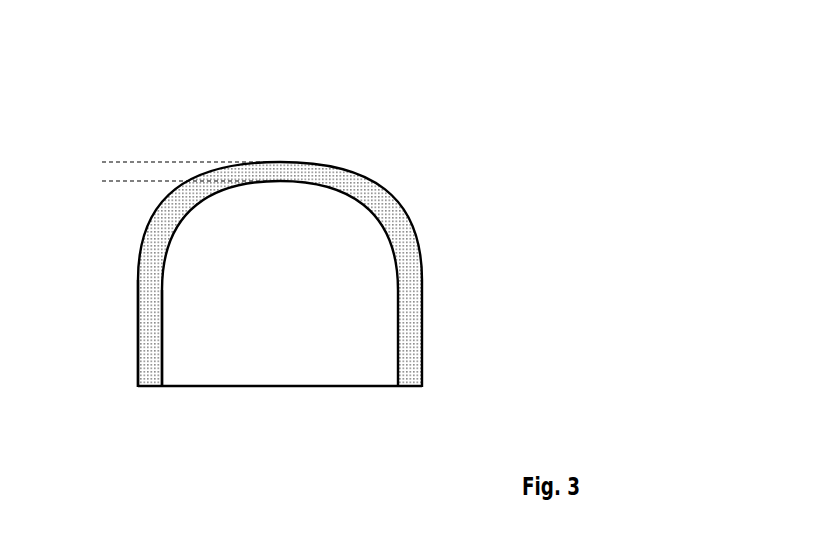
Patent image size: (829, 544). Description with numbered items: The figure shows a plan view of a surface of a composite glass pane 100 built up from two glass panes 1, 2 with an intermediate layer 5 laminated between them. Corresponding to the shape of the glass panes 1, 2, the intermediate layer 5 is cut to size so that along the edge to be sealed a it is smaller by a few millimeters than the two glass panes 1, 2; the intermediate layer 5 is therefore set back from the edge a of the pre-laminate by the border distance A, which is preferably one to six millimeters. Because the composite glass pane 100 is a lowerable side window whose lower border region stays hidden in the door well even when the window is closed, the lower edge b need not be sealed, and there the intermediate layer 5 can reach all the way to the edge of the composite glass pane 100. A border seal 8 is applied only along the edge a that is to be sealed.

The composite glass pane 100 is at (278, 248).
The glass pane 1 is at (319, 267).
The glass pane 2 is at (319, 267).
The border seal 8 is at (393, 205).
The intermediate layer 5 is at (294, 214).
The edge to be sealed a is at (128, 292).
The lower edge b is at (281, 396).
The border distance A is at (118, 189).